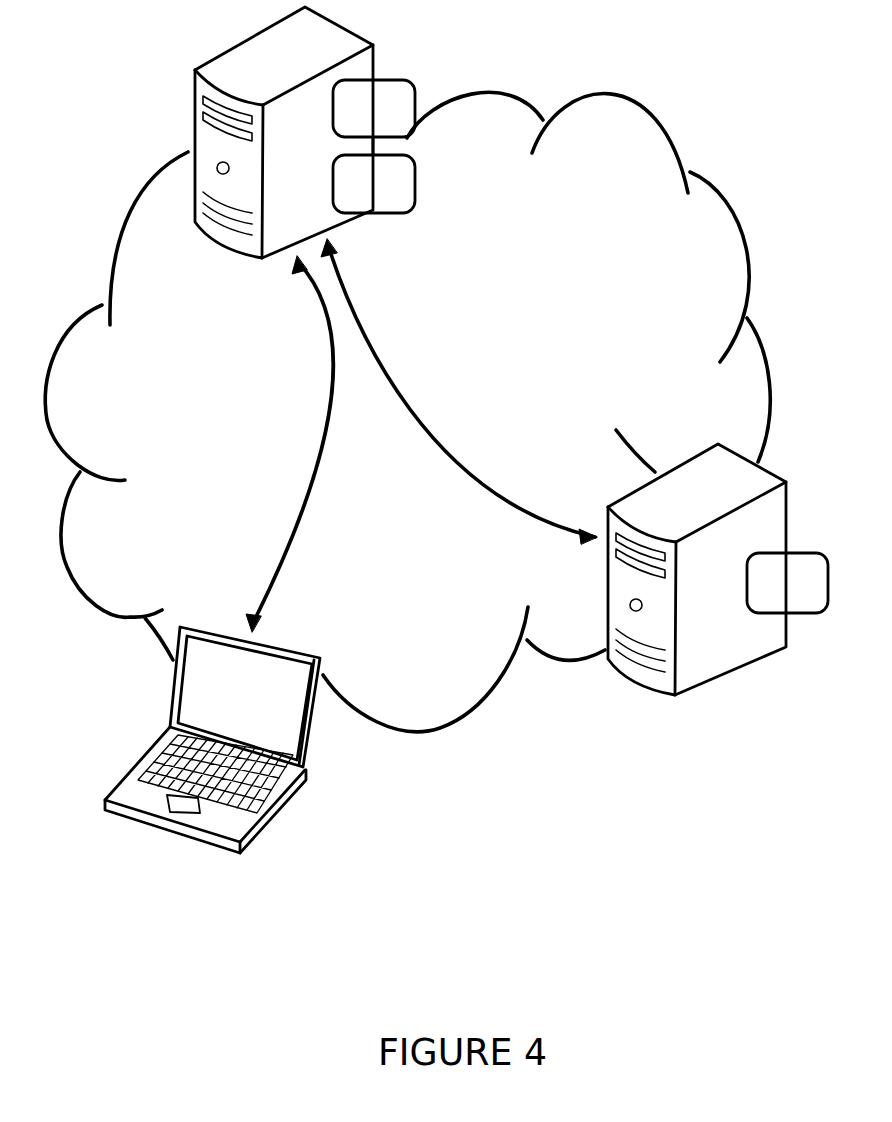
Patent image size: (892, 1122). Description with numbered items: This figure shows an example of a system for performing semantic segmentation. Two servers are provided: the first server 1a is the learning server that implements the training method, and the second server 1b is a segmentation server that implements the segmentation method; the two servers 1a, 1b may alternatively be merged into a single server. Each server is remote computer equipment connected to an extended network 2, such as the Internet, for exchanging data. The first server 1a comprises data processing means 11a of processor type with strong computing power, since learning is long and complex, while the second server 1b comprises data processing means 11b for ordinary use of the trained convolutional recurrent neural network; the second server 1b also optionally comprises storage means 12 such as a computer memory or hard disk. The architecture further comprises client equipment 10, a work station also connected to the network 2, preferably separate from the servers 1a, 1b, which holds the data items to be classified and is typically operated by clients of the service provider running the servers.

The extended network 2 is at (112, 241).
The first server 1a is at (697, 569).
The second server 1b is at (284, 132).
The data processing means 11a is at (787, 583).
The data processing means 11b is at (374, 175).
The storage means 12 is at (374, 108).
The client equipment 10 is at (212, 740).